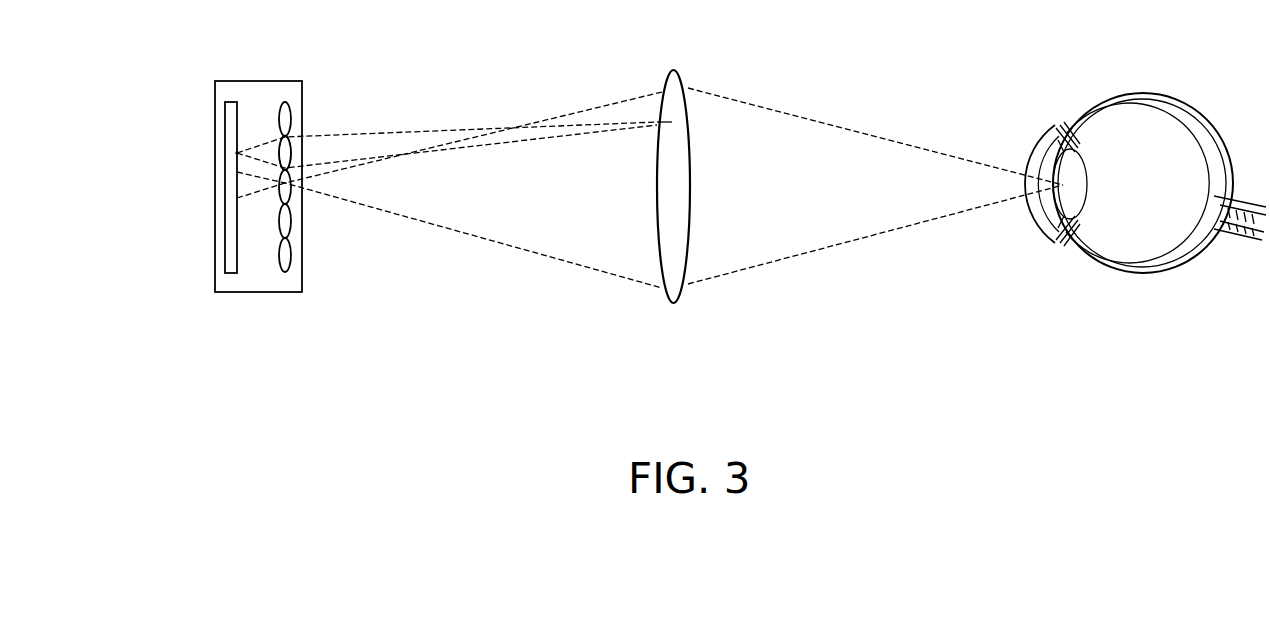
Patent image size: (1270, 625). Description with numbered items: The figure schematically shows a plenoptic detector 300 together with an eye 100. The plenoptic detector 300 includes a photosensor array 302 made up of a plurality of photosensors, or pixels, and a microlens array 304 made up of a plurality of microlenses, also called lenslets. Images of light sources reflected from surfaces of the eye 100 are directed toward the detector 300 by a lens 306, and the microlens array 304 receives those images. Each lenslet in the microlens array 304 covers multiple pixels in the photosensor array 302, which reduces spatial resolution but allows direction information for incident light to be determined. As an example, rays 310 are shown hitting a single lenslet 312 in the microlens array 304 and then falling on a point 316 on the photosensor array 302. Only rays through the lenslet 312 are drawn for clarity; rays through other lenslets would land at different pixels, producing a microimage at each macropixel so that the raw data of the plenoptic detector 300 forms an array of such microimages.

The eye 100 is at (1138, 309).
The plenoptic detector 300 is at (247, 292).
The photosensor array 302 is at (215, 260).
The microlens array 304 is at (291, 260).
The lens 306 is at (675, 304).
The rays 310 is at (389, 133).
The lenslet 312 is at (278, 150).
The point 316 is at (237, 155).